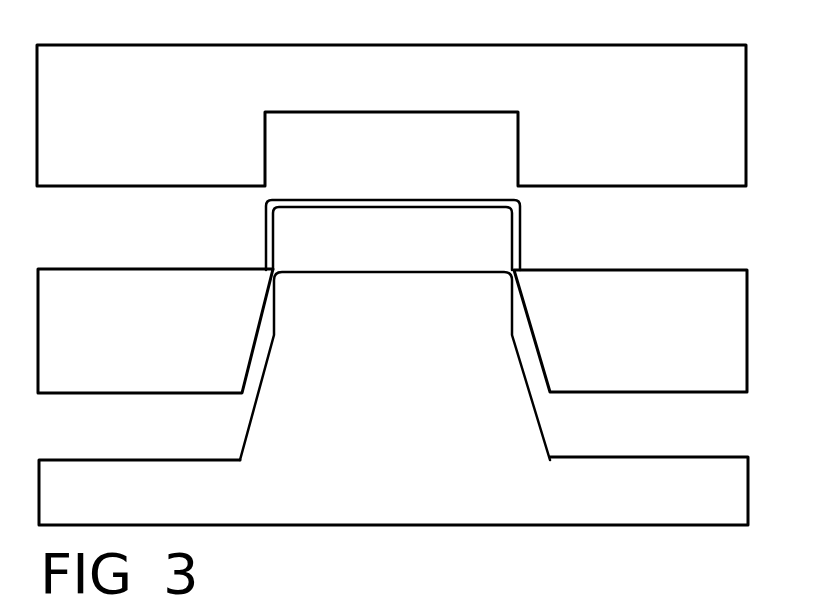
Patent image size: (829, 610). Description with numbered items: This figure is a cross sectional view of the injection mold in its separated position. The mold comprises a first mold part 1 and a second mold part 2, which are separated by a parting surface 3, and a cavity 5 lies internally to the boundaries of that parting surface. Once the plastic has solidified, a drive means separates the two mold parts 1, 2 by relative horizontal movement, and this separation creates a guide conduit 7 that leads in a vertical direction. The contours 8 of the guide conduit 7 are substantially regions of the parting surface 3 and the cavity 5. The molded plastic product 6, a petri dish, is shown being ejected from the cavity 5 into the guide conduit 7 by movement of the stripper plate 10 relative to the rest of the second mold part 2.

The first mold part 1 is at (391, 115).
The second mold part 2 is at (698, 365).
The parting surface 3 is at (151, 186).
The cavity 5 is at (397, 112).
The molded plastic product 6 is at (400, 200).
The guide conduit 7 is at (444, 237).
The contours of the guide conduit 8 is at (113, 189).
The stripper plate 10 is at (630, 331).